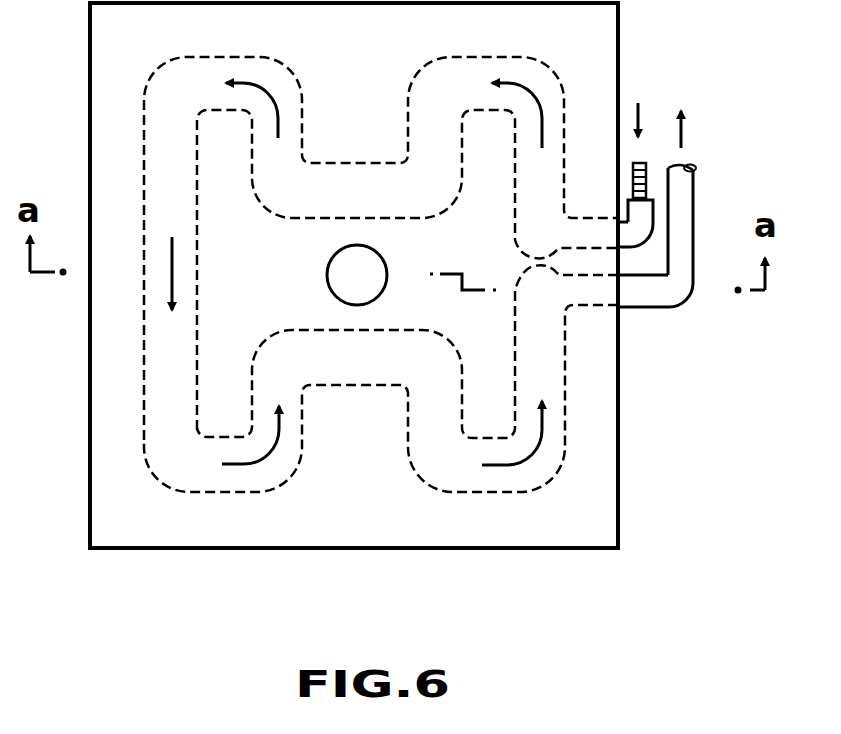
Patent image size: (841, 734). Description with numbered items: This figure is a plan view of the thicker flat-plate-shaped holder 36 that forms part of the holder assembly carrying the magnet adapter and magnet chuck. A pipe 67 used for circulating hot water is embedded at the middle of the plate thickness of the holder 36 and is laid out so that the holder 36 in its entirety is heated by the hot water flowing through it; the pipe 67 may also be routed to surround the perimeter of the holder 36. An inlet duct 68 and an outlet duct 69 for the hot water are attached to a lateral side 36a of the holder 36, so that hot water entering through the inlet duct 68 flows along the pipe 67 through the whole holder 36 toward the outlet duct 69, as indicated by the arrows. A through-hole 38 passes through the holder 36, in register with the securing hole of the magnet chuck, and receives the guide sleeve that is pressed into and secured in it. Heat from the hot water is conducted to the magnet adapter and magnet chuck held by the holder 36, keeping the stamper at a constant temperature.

The holder 36 is at (595, 487).
The lateral side of the holder 36a is at (618, 34).
The pipe 67 is at (145, 358).
The inlet duct 68 is at (643, 162).
The outlet duct 69 is at (683, 191).
The through-hole 38 is at (366, 258).